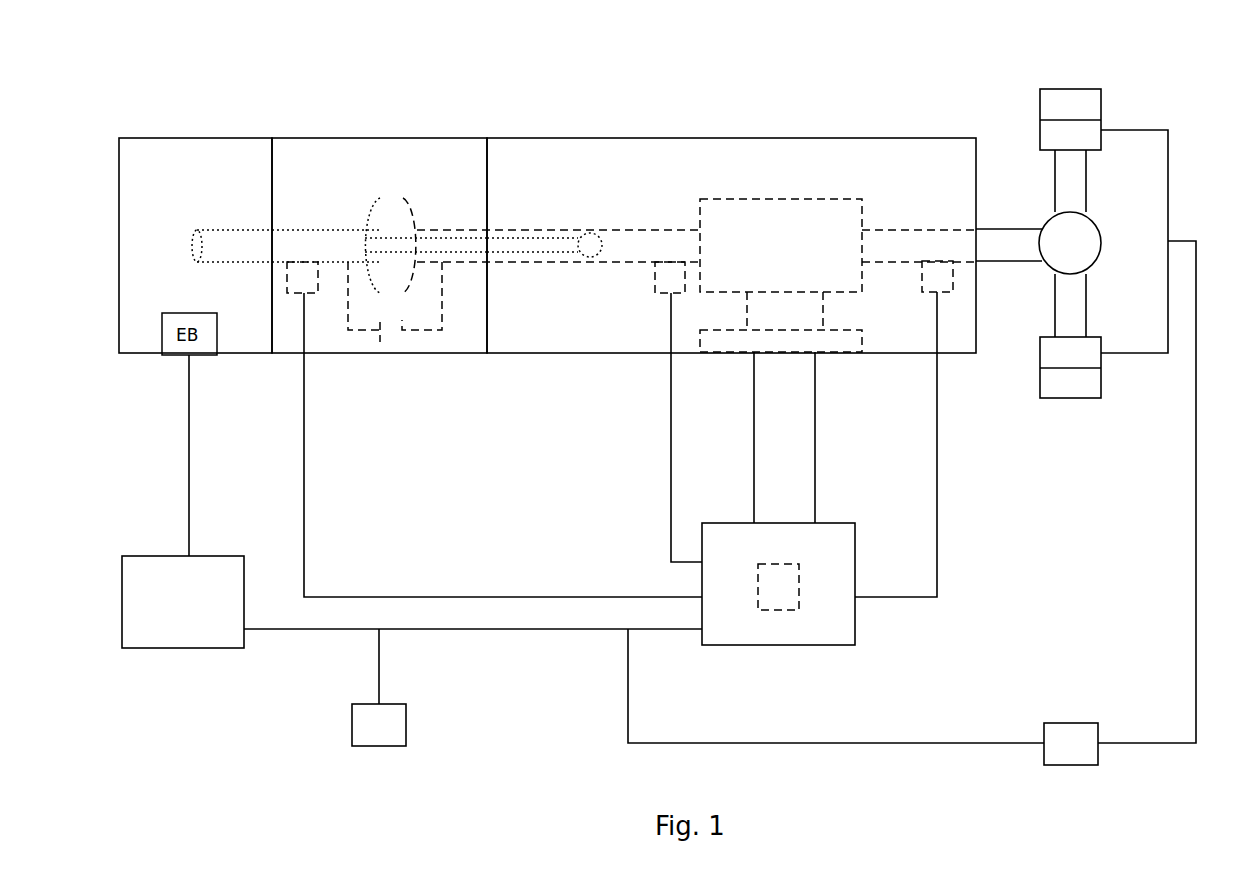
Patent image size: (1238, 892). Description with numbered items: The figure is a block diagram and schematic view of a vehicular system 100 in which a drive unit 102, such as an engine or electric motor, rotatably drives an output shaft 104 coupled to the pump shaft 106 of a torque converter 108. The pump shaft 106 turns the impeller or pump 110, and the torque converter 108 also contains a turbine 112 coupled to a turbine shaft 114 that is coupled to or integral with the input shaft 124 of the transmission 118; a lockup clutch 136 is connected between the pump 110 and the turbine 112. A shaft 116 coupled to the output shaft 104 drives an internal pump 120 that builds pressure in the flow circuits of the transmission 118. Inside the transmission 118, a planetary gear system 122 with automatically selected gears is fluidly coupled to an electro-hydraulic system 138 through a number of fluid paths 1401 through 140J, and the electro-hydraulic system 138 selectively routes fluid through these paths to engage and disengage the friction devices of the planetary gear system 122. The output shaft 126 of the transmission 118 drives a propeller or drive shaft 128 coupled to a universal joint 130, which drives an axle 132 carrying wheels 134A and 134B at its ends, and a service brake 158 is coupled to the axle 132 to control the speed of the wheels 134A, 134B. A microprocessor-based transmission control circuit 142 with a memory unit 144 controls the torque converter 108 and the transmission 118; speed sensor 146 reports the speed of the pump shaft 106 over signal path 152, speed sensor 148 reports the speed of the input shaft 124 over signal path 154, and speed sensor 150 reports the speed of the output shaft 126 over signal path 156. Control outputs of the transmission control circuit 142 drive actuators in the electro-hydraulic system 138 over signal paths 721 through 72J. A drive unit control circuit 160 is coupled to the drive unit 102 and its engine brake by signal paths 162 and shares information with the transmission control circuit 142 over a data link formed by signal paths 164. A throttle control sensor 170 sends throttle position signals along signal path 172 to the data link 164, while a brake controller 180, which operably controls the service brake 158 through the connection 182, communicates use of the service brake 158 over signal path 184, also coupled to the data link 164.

The vehicular system 100 is at (187, 88).
The drive unit 102 is at (240, 138).
The output shaft 104 is at (224, 264).
The pump shaft 106 is at (325, 230).
The torque converter 108 is at (355, 138).
The pump 110 is at (368, 205).
The turbine 112 is at (410, 208).
The turbine shaft 114 is at (420, 230).
The shaft 116 is at (517, 249).
The transmission 118 is at (655, 138).
The internal pump 120 is at (591, 232).
The planetary gear system 122 is at (802, 255).
The input shaft 124 is at (673, 230).
The output shaft 126 is at (898, 230).
The drive shaft 128 is at (1012, 229).
The universal joint 130 is at (1102, 243).
The axle 132 is at (1086, 182).
The wheel 134A is at (1060, 89).
The wheel 134B is at (1058, 398).
The lockup clutch 136 is at (402, 335).
The electro-hydraulic system 138 is at (720, 352).
The fluid path 1401 is at (747, 312).
The fluid path 140J is at (823, 312).
The transmission control circuit 142 is at (788, 647).
The memory unit 144 is at (790, 611).
The speed sensor 146 is at (287, 282).
The speed sensor 148 is at (655, 280).
The speed sensor 150 is at (953, 285).
The signal path 152 is at (468, 597).
The signal path 154 is at (671, 418).
The signal path 156 is at (937, 460).
The service brake 158 is at (1040, 140).
The drive unit control circuit 160 is at (205, 648).
The signal paths 162 is at (189, 477).
The signal paths 164 is at (468, 630).
The throttle control sensor 170 is at (406, 731).
The signal path 172 is at (379, 658).
The brake controller 180 is at (1068, 723).
The brake control line 182 is at (1196, 490).
The signal path 184 is at (832, 743).
The signal path 721 is at (754, 460).
The signal path 72J is at (815, 460).